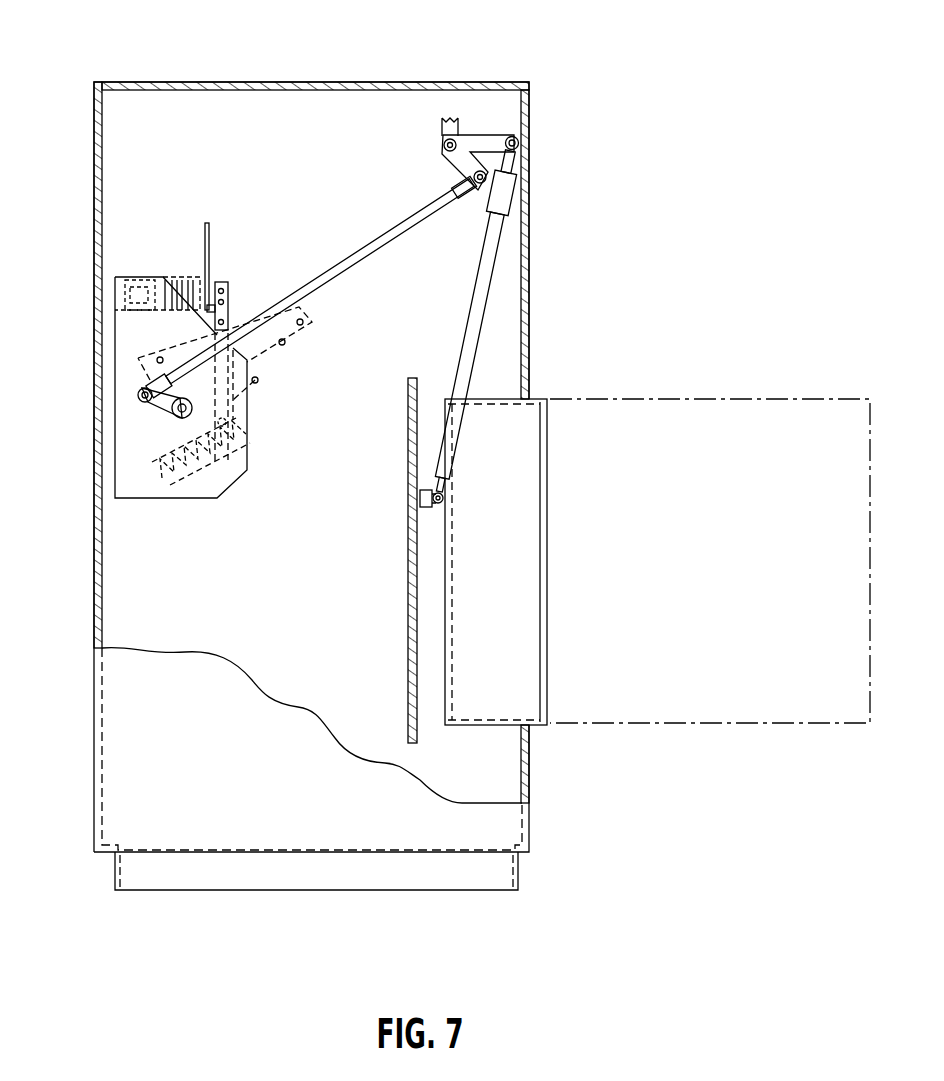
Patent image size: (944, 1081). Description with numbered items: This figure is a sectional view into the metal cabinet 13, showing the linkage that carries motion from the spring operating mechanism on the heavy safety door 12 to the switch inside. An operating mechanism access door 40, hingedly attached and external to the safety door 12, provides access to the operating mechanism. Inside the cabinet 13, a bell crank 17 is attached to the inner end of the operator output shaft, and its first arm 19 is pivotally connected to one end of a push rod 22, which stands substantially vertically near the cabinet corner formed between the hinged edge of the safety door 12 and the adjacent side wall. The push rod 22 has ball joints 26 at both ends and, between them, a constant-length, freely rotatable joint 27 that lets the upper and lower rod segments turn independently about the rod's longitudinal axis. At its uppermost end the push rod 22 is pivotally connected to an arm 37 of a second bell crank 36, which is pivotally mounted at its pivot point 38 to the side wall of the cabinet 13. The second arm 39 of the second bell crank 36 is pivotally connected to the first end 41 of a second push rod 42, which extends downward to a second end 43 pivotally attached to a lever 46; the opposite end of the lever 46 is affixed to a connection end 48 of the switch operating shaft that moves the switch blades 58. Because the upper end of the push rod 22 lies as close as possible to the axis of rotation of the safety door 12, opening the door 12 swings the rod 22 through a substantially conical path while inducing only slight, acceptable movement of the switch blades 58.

The safety door 12 is at (740, 397).
The metal cabinet 13 is at (285, 80).
The bell crank 17 is at (423, 484).
The first arm 19 is at (420, 499).
The push rod 22 is at (486, 307).
The ball joints 26 is at (518, 143).
The joint 27 is at (515, 197).
The second bell crank 36 is at (482, 137).
The arm 37 is at (500, 137).
The pivot point 38 is at (443, 145).
The second arm 39 is at (468, 168).
The operating mechanism access door 40 is at (550, 621).
The first end 41 is at (483, 183).
The second push rod 42 is at (358, 250).
The second end 43 is at (140, 395).
The lever 46 is at (105, 417).
The connection end 48 is at (178, 418).
The switch blades 58 is at (227, 283).